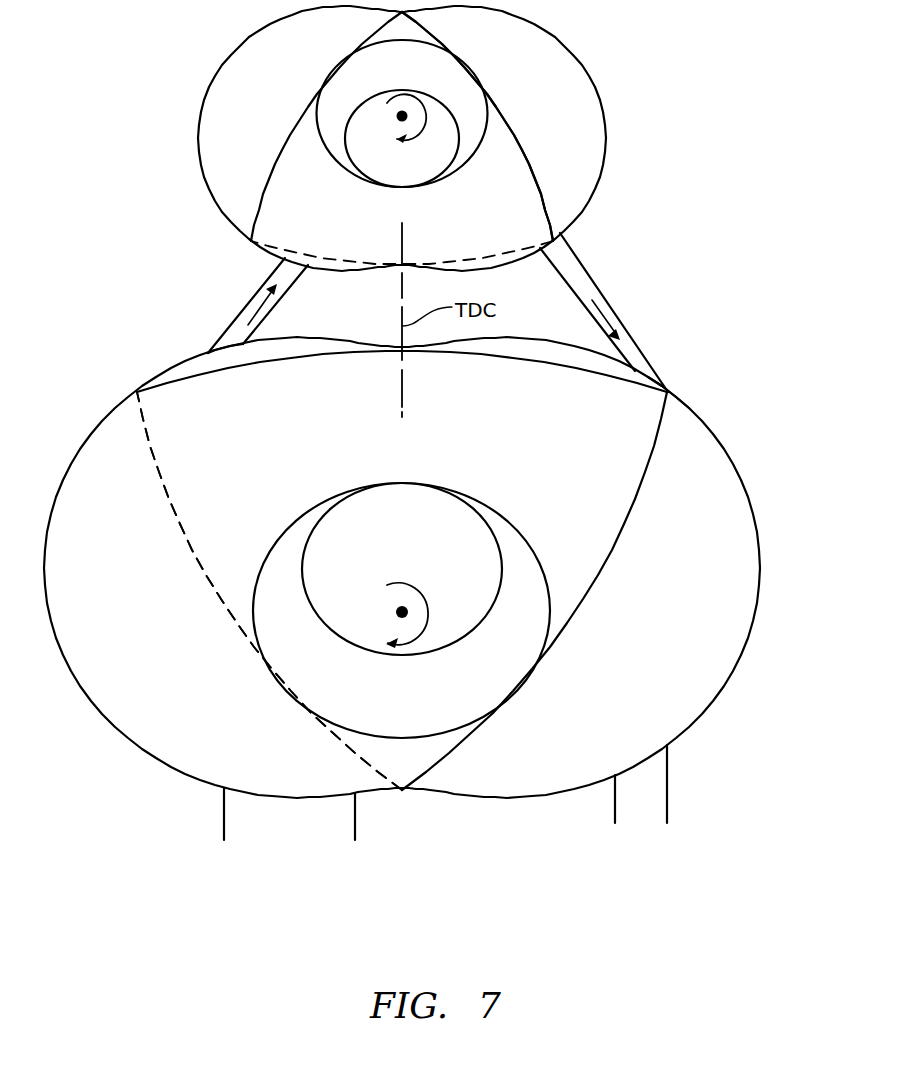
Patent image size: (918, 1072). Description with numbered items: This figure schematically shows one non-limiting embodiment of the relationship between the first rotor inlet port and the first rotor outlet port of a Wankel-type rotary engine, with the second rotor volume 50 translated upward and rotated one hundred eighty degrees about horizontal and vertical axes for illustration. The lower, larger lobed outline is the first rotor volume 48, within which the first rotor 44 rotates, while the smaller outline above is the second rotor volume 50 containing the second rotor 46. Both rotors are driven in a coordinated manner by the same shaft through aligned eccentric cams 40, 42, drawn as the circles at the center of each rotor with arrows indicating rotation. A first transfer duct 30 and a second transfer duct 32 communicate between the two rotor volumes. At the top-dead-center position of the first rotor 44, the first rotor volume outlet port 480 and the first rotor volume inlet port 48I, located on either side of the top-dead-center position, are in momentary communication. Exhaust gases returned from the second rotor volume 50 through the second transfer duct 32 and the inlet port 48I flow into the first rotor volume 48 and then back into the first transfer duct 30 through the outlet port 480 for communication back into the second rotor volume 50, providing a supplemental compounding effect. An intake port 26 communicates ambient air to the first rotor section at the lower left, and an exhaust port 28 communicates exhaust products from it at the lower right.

The intake port 26 is at (292, 823).
The exhaust port 28 is at (642, 810).
The first transfer duct 30 is at (282, 278).
The second transfer duct 32 is at (592, 290).
The eccentric cam 40 is at (443, 551).
The eccentric cam 42 is at (437, 167).
The first rotor 44 is at (147, 454).
The second rotor 46 is at (553, 200).
The first rotor volume 48 is at (732, 547).
The first rotor volume inlet port 48I is at (668, 395).
The first rotor volume outlet port 480 is at (225, 350).
The second rotor volume 50 is at (585, 122).